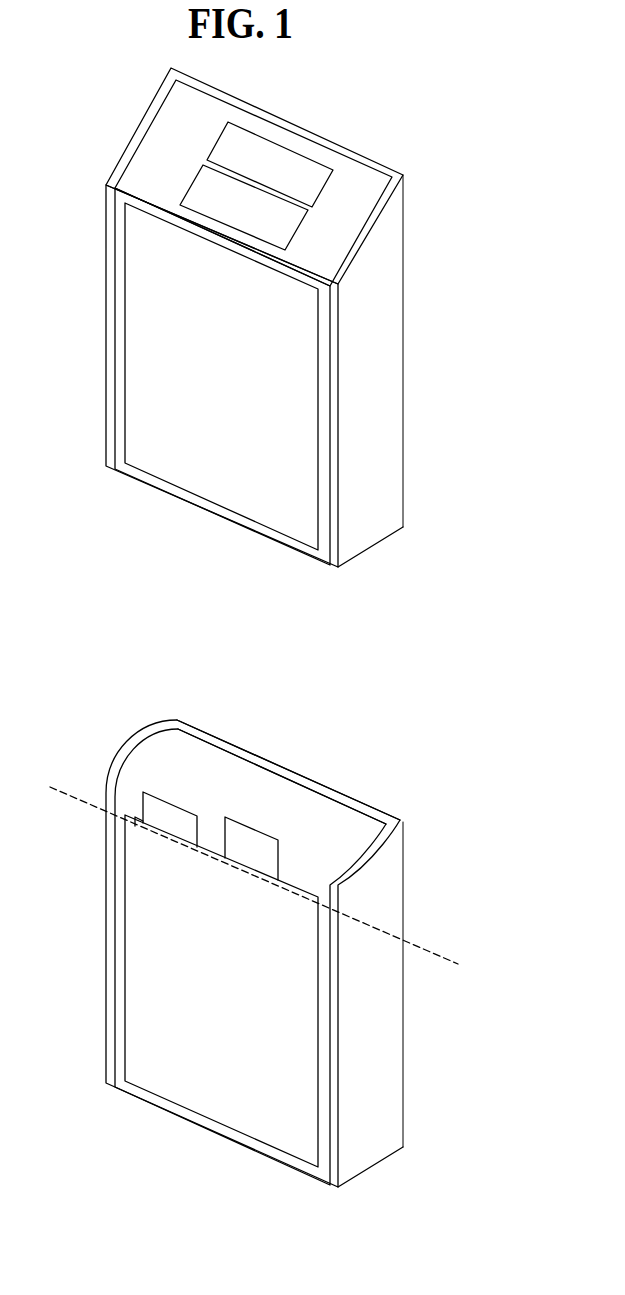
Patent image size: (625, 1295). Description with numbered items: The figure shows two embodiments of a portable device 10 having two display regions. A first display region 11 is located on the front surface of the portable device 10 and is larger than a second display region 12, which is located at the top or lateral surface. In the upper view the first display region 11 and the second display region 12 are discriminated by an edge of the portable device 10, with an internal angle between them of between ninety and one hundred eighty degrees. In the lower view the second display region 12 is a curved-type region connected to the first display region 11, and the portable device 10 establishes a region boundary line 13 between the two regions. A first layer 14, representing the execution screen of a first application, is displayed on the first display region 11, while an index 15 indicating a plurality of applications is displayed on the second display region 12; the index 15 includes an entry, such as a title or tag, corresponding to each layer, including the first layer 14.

The portable device 10 is at (372, 512).
The first display region 11 is at (115, 361).
The second display region 12 is at (352, 185).
The region boundary line 13 is at (432, 957).
The first layer 14 is at (202, 473).
The index 15 is at (223, 147).